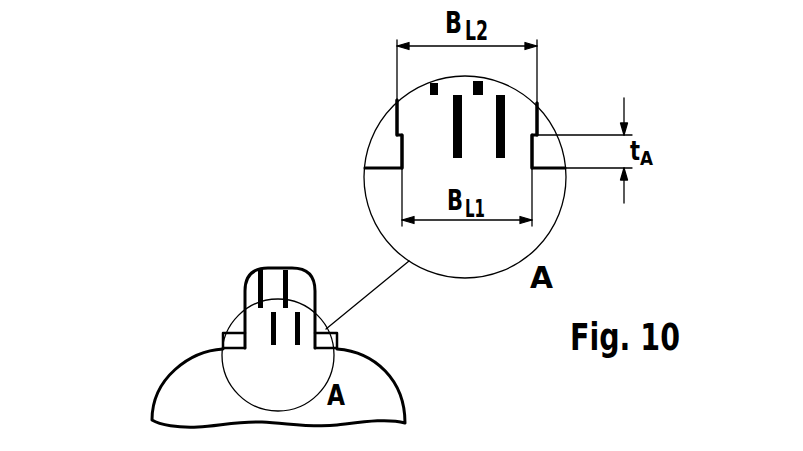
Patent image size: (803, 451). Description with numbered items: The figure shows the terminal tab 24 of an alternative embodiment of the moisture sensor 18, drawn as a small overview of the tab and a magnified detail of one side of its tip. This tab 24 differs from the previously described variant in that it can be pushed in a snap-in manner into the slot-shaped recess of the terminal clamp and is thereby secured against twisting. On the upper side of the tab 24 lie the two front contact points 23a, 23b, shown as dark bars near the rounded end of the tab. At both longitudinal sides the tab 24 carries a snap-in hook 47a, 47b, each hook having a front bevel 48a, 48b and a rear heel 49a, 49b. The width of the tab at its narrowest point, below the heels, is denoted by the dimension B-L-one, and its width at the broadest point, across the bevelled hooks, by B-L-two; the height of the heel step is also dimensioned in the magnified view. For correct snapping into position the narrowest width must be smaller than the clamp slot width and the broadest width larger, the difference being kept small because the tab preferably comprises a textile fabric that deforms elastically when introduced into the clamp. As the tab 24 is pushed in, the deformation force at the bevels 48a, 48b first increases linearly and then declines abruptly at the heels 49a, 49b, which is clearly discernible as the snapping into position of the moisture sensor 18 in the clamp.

The moisture sensor 18 is at (136, 395).
The terminal tab 24 is at (246, 295).
The front contact point 23a is at (448, 117).
The front contact point 23b is at (505, 108).
The snap-in hook 47a is at (241, 348).
The snap-in hook 47b is at (323, 348).
The front bevel 48a is at (398, 125).
The front bevel 48b is at (537, 121).
The rear heel 49a is at (401, 140).
The rear heel 49b is at (536, 128).